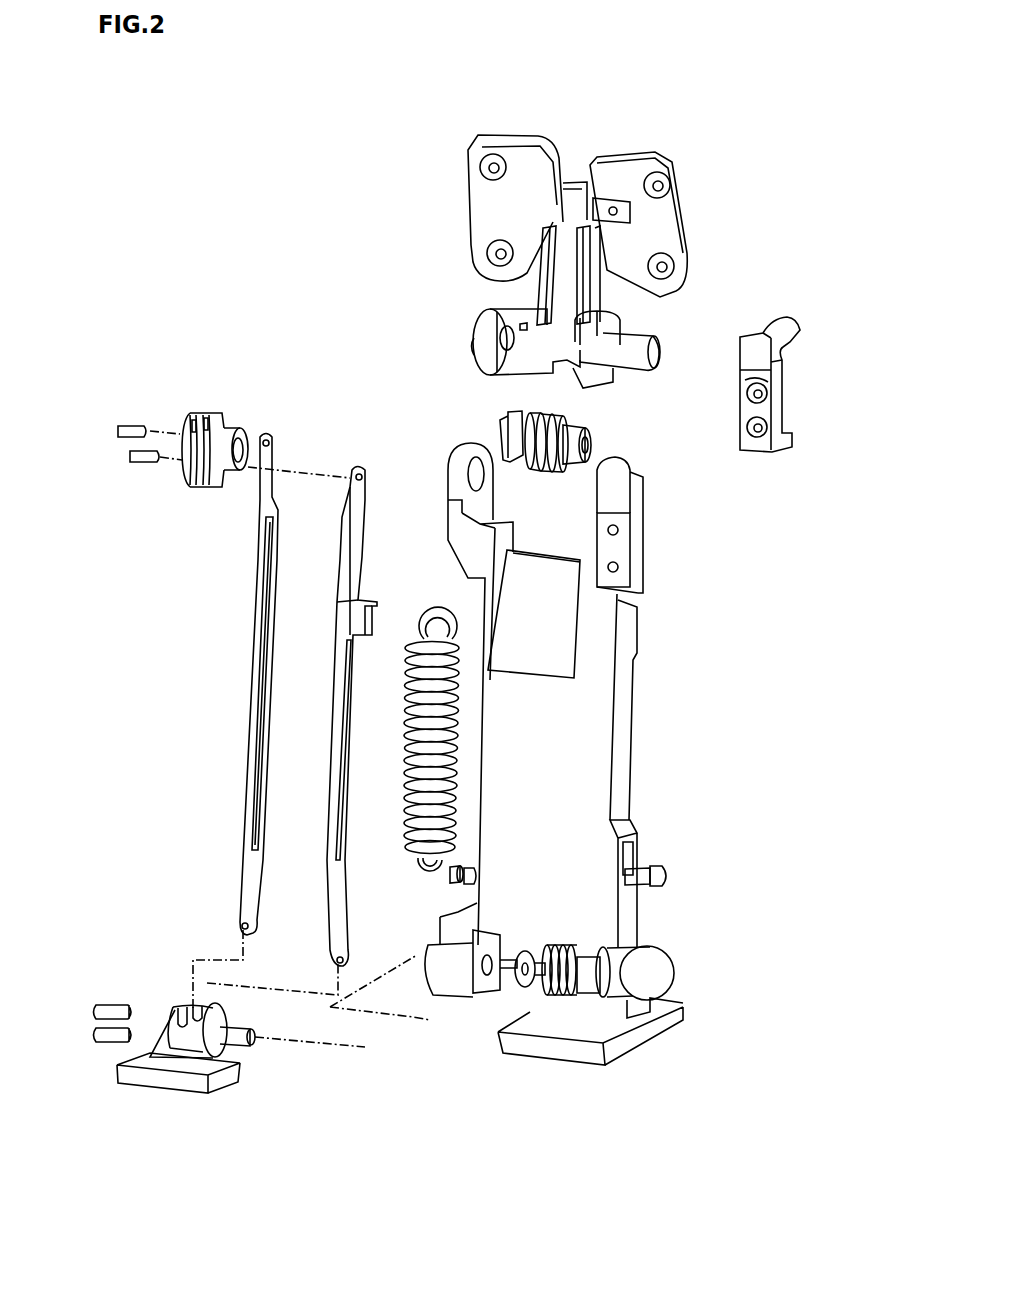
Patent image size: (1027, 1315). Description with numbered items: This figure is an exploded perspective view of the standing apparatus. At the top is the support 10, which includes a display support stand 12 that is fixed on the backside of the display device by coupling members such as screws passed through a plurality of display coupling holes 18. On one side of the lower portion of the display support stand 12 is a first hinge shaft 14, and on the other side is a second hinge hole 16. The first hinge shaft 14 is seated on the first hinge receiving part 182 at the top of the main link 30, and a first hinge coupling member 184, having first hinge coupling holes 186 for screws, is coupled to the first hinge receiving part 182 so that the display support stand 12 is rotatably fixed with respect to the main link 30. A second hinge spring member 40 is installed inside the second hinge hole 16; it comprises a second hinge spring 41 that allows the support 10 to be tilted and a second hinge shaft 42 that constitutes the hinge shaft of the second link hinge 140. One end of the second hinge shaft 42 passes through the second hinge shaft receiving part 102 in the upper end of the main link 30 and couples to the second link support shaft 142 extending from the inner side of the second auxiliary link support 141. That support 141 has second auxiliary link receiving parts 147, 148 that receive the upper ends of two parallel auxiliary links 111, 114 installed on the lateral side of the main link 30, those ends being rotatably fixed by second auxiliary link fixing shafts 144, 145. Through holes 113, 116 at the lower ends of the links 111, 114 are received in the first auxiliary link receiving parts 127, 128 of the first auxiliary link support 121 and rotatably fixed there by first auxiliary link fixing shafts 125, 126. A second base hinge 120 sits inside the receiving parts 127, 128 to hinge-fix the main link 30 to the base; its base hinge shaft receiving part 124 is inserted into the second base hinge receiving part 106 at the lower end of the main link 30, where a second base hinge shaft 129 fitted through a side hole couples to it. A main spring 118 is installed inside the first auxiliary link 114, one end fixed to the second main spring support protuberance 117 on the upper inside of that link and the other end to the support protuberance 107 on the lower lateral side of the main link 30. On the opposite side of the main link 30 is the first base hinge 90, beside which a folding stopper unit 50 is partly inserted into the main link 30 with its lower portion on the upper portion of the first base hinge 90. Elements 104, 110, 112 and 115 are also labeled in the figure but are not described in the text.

The support 10 is at (681, 155).
The display support stand 12 is at (614, 165).
The first hinge shaft 14 is at (632, 334).
The second hinge hole 16 is at (500, 340).
The display coupling holes 18 is at (480, 257).
The main link 30 is at (537, 680).
The second hinge spring member 40 is at (588, 412).
The second hinge spring 41 is at (536, 472).
The second hinge shaft 42 is at (590, 472).
The folding stopper unit 50 is at (655, 862).
The first base hinge 90 is at (674, 948).
The second hinge shaft receiving part 102 is at (463, 467).
The base plate 104 is at (587, 1000).
The second base hinge receiving part 106 is at (453, 978).
The support protuberance 107 is at (450, 893).
The link assembly 110 is at (228, 775).
The auxiliary link 111 is at (250, 680).
The upper hole of first link 112 is at (273, 443).
The through hole 113 is at (236, 925).
The first auxiliary link 114 is at (360, 568).
The upper hole of second link 115 is at (367, 477).
The through hole 116 is at (334, 965).
The second main spring support protuberance 117 is at (378, 602).
The main spring 118 is at (418, 722).
The second base hinge 120 is at (152, 1105).
The first auxiliary link support 121 is at (170, 1020).
The first base hinge shaft receiving part 124 is at (238, 1066).
The first auxiliary link fixing shaft 125 is at (93, 1010).
The first auxiliary link fixing shaft 126 is at (93, 1033).
The first auxiliary link receiving part 127 is at (180, 1010).
The first auxiliary link receiving part 128 is at (213, 1008).
The second base hinge shaft 129 is at (528, 988).
The second link hinge 140 is at (208, 402).
The second auxiliary link support 141 is at (220, 413).
The second link support shaft 142 is at (240, 430).
The second auxiliary link fixing shaft 144 is at (128, 424).
The second auxiliary link fixing shaft 145 is at (128, 457).
The second auxiliary link receiving part 147 is at (192, 478).
The second auxiliary link receiving part 148 is at (200, 488).
The first hinge receiving part 182 is at (610, 462).
The first hinge coupling member 184 is at (800, 325).
The first hinge coupling holes 186 is at (760, 397).